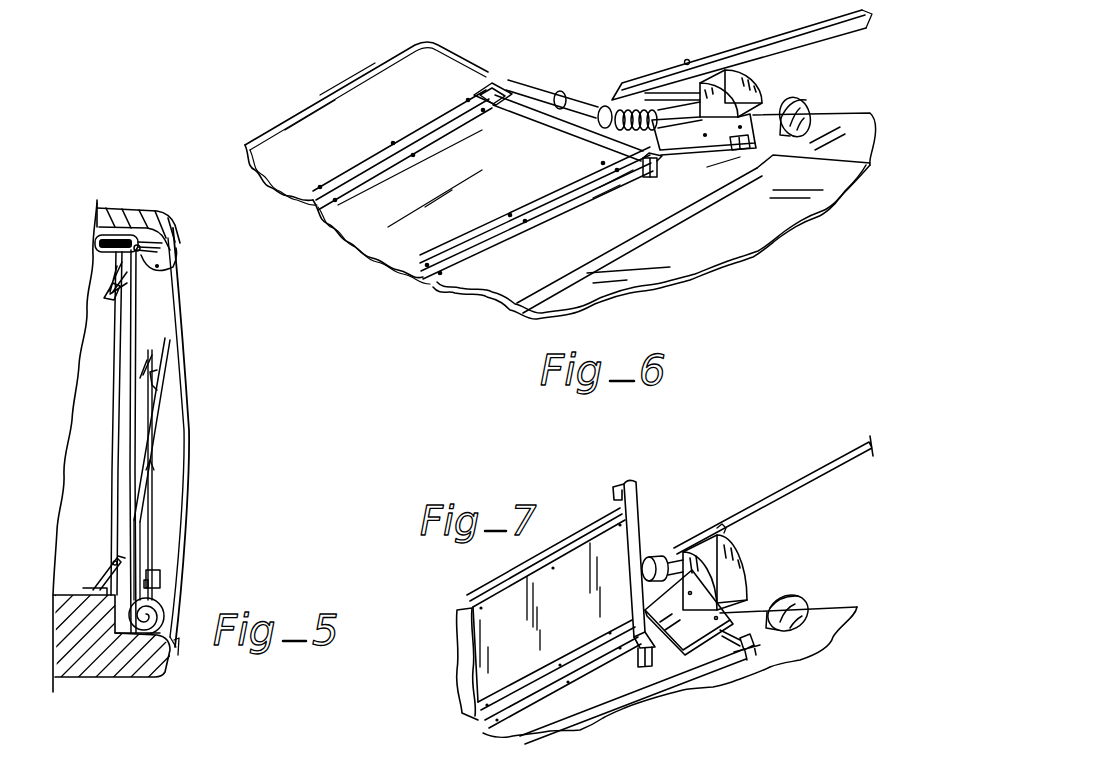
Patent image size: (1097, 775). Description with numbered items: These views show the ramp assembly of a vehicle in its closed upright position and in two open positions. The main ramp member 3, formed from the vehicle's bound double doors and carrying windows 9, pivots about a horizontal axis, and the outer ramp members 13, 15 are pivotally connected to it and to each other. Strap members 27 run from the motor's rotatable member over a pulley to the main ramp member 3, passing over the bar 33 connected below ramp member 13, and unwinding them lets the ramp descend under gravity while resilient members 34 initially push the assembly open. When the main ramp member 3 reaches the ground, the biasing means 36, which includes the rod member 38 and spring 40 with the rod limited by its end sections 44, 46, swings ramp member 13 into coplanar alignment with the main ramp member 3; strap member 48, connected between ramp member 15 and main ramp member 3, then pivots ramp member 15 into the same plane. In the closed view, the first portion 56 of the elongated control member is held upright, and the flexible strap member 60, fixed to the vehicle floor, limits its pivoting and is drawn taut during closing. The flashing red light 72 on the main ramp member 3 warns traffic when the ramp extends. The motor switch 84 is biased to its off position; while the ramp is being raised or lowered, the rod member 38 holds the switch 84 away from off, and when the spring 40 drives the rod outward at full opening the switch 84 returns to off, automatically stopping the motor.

In FIG. 5, the main ramp member 3 is at (184, 415).
In FIG. 5, the windows 9 is at (205, 354).
In FIG. 6, the outer ramp member 13 is at (440, 254).
In FIG. 7, the outer ramp member 13 is at (565, 617).
In FIG. 6, the outer ramp member 15 is at (388, 124).
In FIG. 7, the outer ramp member 15 is at (457, 653).
In FIG. 6, the strap member 27 is at (777, 45).
In FIG. 7, the strap member 27 is at (775, 494).
In FIG. 6, the bar 33 is at (557, 93).
In FIG. 7, the bar 33 is at (670, 560).
In FIG. 5, the resilient members 34 is at (137, 523).
In FIG. 6, the biasing means 36 is at (599, 62).
In FIG. 7, the biasing means 36 is at (702, 495).
In FIG. 6, the rod member 38 is at (660, 165).
In FIG. 7, the rod member 38 is at (737, 633).
In FIG. 6, the spring 40 is at (650, 197).
In FIG. 6, the end section 44 is at (588, 108).
In FIG. 7, the end section 46 is at (749, 660).
In FIG. 6, the strap member 48 is at (540, 118).
In FIG. 7, the strap member 48 is at (637, 553).
In FIG. 5, the first portion 56 is at (112, 452).
In FIG. 5, the flexible strap member 60 is at (97, 570).
In FIG. 6, the flashing red light 72 is at (805, 102).
In FIG. 7, the flashing red light 72 is at (827, 567).
In FIG. 6, the motor switch 84 is at (740, 149).
In FIG. 7, the motor switch 84 is at (668, 680).